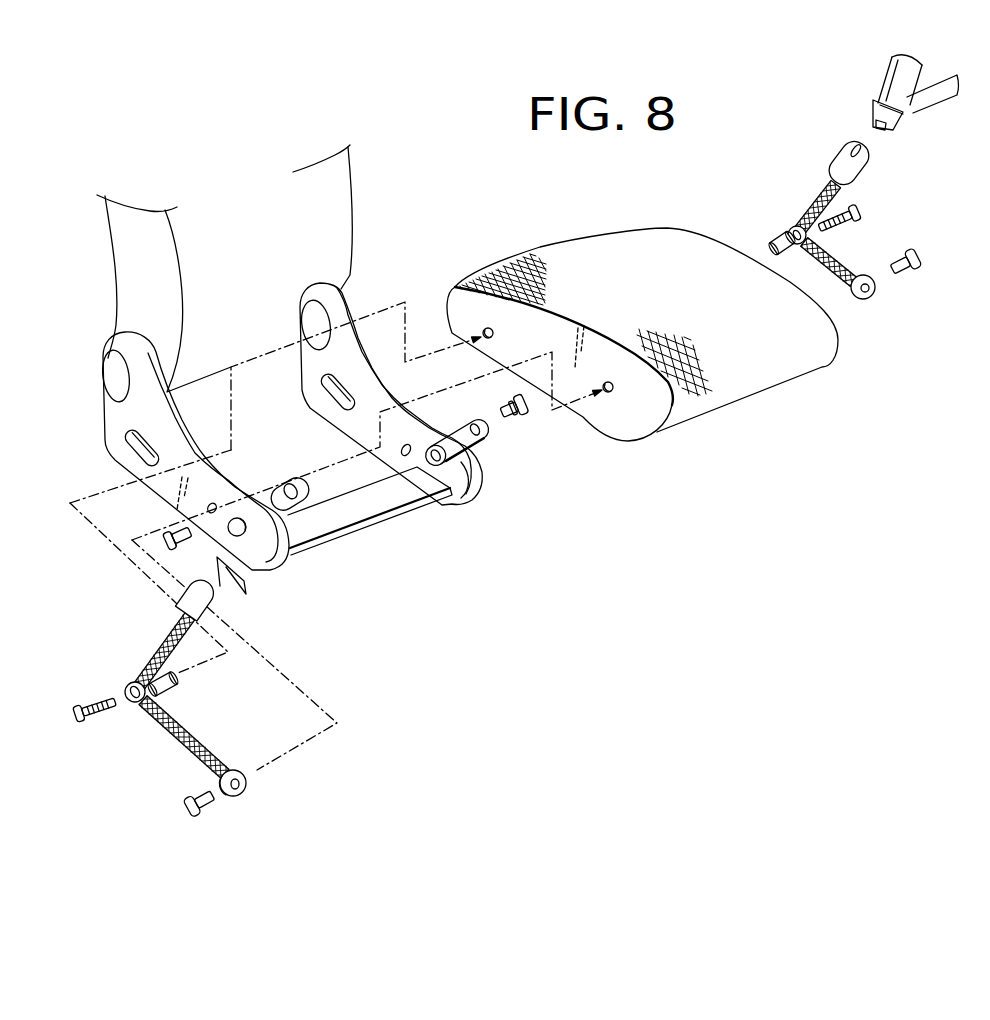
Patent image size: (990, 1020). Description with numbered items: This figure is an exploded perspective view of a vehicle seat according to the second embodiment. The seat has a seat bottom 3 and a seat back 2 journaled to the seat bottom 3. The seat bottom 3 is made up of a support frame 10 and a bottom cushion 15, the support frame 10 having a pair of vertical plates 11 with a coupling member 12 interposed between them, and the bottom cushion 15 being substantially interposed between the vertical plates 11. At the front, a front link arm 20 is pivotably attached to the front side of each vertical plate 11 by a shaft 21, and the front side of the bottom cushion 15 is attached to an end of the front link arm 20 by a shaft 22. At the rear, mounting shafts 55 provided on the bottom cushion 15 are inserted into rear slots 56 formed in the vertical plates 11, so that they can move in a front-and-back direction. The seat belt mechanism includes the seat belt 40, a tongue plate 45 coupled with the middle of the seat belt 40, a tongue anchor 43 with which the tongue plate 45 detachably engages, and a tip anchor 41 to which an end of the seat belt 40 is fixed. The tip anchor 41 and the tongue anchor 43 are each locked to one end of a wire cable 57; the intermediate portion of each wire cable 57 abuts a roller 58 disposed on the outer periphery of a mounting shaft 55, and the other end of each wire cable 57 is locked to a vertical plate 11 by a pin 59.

The seat back 2 is at (128, 287).
The seat bottom 3 is at (458, 253).
The support frame 10 is at (402, 517).
The vertical plate 11 is at (287, 537).
The coupling member 12 is at (360, 510).
The bottom cushion 15 is at (762, 372).
The front link arm 20 is at (300, 480).
The shaft 21 is at (235, 520).
The shaft 22 is at (163, 547).
The seat belt 40 is at (932, 97).
The tip anchor 41 is at (212, 598).
The tongue anchor 43 is at (853, 173).
The tongue plate 45 is at (893, 127).
The mounting shaft 55 is at (104, 718).
The rear slot 56 is at (137, 442).
The wire cable 57 is at (160, 644).
The roller 58 is at (150, 685).
The pin 59 is at (203, 807).